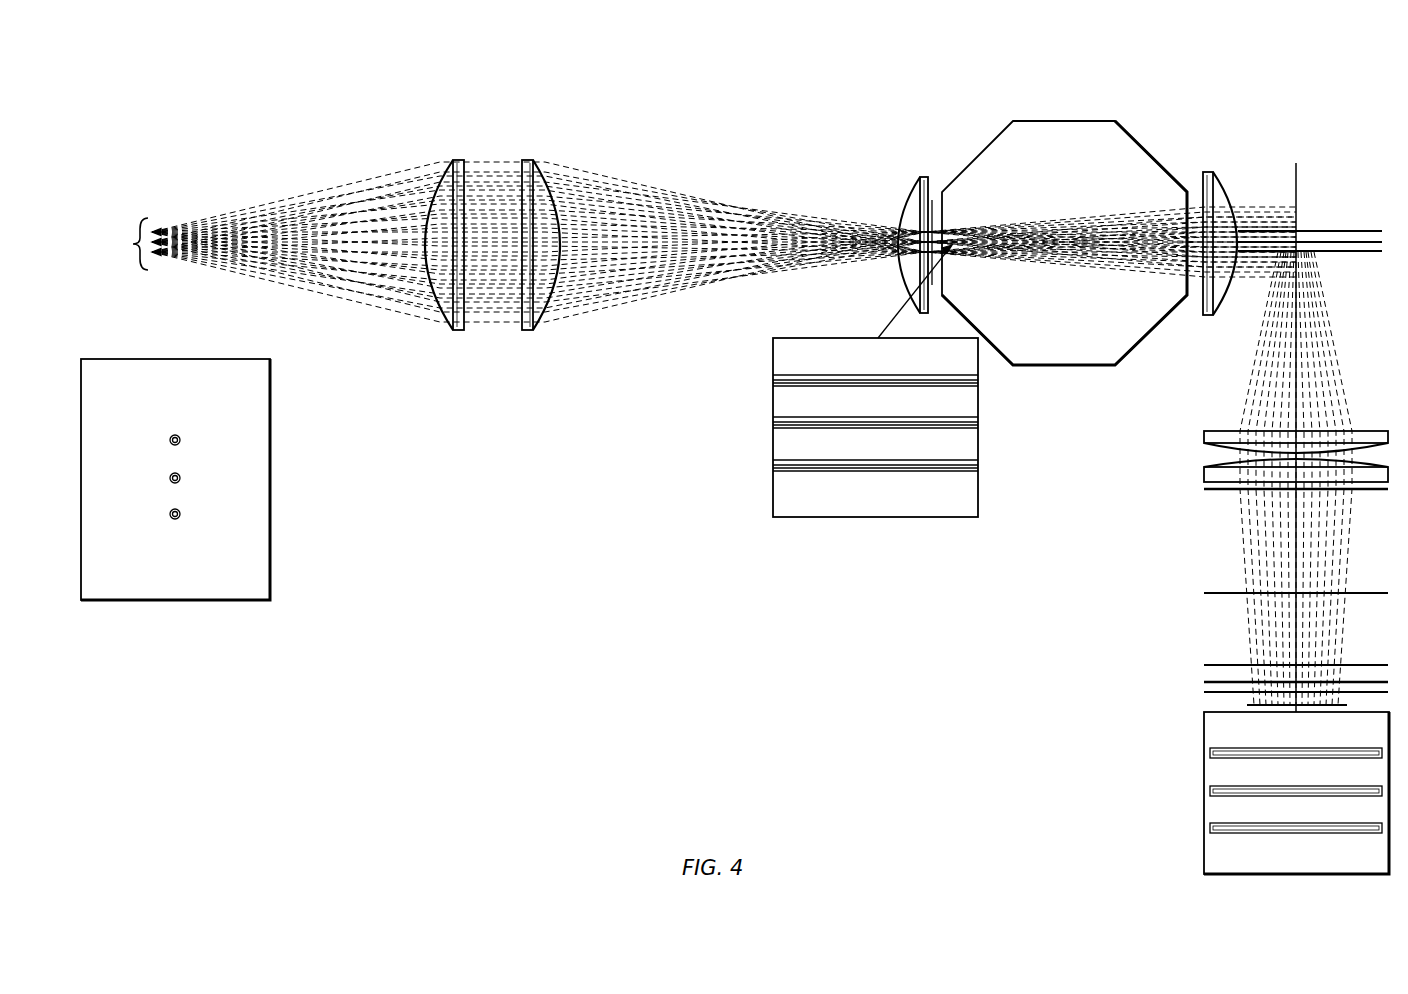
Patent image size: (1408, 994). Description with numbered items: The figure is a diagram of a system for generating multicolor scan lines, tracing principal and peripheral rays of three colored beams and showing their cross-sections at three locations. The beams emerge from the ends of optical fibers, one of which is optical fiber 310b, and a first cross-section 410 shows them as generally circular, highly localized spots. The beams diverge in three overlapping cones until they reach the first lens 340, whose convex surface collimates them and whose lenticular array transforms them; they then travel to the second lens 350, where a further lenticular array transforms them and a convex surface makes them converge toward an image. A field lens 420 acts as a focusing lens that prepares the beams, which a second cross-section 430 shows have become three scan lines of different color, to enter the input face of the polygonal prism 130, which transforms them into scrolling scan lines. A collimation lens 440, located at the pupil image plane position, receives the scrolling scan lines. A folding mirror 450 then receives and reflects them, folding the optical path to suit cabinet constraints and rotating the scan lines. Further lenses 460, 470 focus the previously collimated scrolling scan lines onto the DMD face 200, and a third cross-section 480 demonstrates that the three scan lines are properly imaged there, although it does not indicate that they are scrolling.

The optical fiber 310b is at (124, 244).
The first lens 340 is at (453, 160).
The second lens 350 is at (533, 160).
The field lens 420 is at (906, 194).
The polygonal prism 130 is at (1065, 121).
The collimation lens 440 is at (1225, 186).
The folding mirror 450 is at (1305, 218).
The lens 460 is at (1204, 436).
The lens 470 is at (1204, 474).
The DMD face 200 is at (1263, 784).
The third cross-section 480 is at (1204, 808).
The second cross-section 430 is at (886, 518).
The first cross-section 410 is at (165, 602).